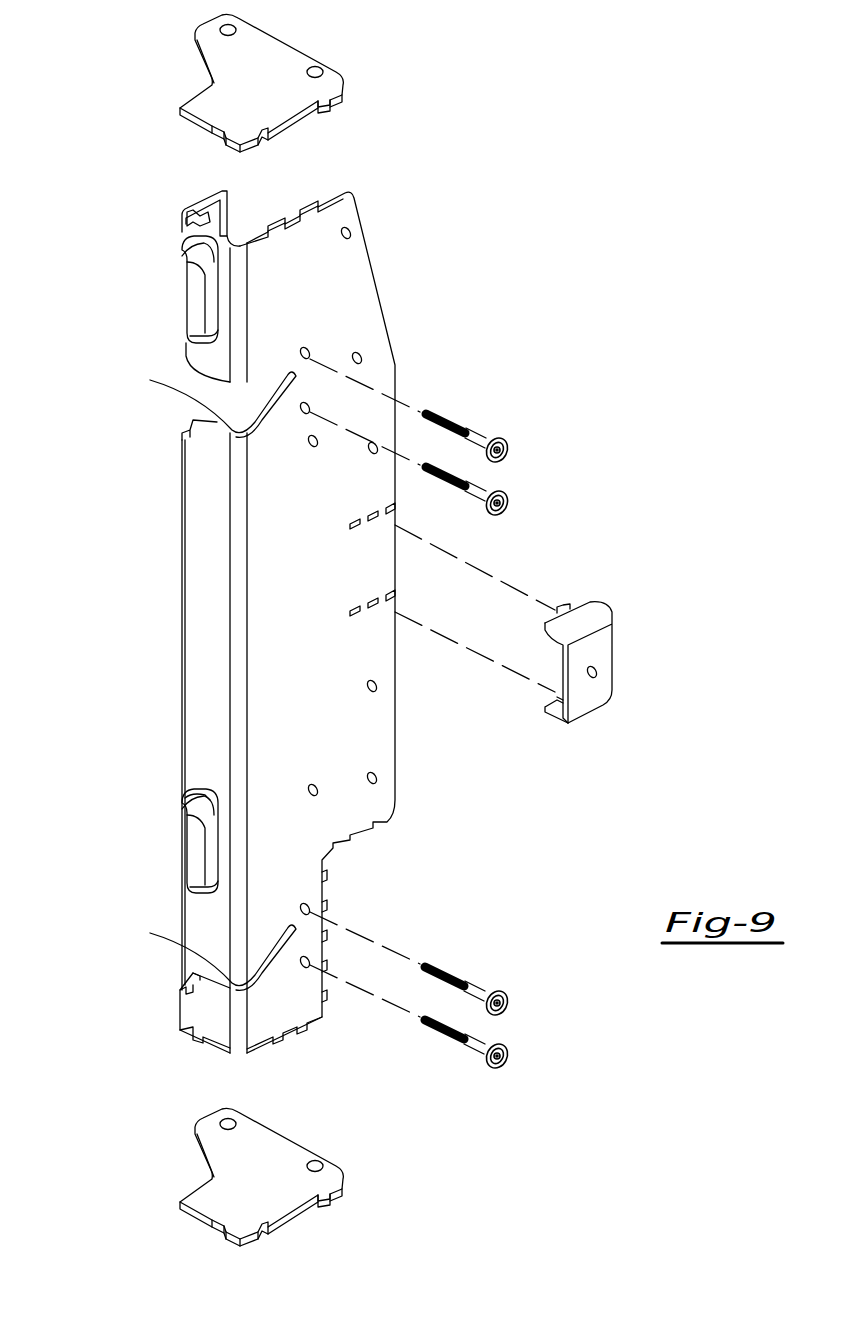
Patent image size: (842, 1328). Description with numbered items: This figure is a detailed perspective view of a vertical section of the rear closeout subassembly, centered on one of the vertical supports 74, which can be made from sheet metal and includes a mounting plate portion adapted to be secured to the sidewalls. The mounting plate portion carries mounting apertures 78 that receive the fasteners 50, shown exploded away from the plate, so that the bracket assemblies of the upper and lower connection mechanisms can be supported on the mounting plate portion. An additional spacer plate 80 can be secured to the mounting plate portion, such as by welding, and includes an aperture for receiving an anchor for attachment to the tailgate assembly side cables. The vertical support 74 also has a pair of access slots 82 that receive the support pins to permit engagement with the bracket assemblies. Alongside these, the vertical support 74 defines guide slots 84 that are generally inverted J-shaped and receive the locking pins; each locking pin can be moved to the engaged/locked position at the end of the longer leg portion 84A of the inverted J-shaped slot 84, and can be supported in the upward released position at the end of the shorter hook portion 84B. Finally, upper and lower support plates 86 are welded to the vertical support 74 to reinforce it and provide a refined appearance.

The vertical support 74 is at (202, 647).
The mounting apertures 78 is at (305, 347).
The spacer plate 80 is at (605, 648).
The access slots 82 is at (229, 430).
The guide slots 84 is at (205, 290).
The longer leg portion 84A is at (200, 340).
The shorter hook portion 84B is at (192, 230).
The support plates 86 is at (290, 65).
The fasteners 50 is at (485, 437).